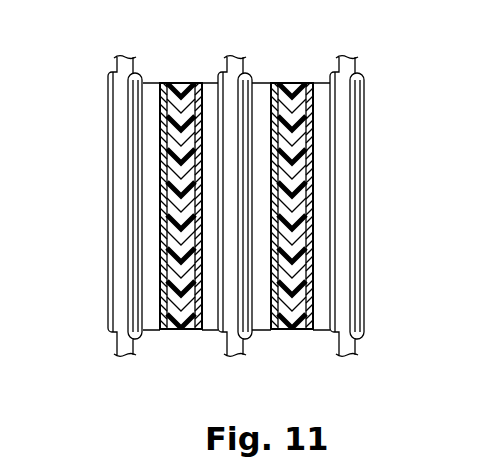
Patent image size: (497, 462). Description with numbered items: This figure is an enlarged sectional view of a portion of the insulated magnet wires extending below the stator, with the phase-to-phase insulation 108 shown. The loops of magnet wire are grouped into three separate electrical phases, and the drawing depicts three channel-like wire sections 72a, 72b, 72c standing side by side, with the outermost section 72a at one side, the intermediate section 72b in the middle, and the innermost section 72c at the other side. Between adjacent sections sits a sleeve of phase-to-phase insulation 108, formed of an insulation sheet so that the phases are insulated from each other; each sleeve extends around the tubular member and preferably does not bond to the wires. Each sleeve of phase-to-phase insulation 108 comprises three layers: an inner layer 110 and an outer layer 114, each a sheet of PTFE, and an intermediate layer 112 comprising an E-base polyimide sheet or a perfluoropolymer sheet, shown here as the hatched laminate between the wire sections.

The frame channel member 72a is at (352, 196).
The frame channel member 72b is at (227, 312).
The frame channel member 72c is at (120, 290).
The phase-to-phase insulation 108 is at (179, 74).
The inner layer 110 is at (307, 332).
The intermediate layer 112 is at (292, 107).
The outer layer 114 is at (274, 82).